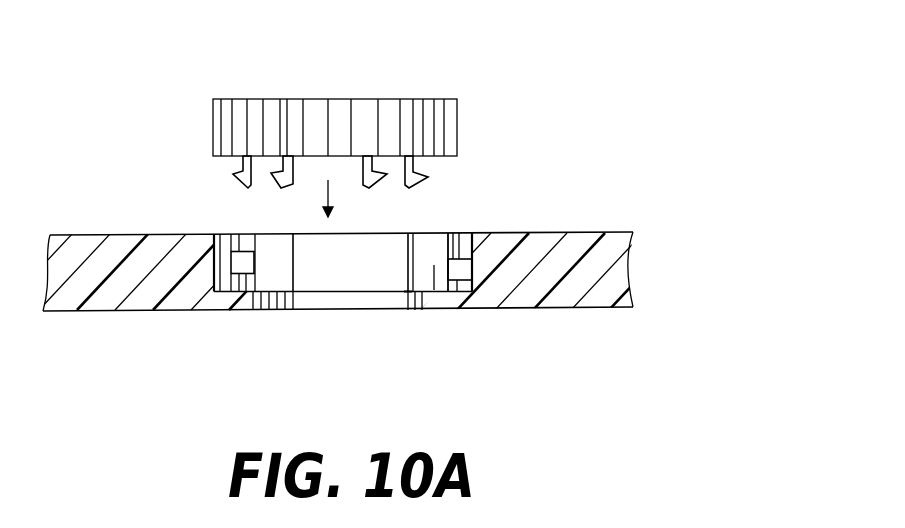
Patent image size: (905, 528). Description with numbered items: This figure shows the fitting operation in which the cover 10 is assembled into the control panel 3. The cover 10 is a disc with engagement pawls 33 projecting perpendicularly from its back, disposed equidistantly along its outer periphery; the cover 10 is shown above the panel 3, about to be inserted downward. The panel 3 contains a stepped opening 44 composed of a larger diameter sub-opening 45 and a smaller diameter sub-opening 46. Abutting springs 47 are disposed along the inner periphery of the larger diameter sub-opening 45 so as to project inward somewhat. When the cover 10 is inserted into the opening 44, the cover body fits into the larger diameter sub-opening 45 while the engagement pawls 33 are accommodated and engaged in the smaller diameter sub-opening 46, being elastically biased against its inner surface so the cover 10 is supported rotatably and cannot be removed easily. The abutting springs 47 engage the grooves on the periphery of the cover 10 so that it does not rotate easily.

The cover 10 is at (365, 98).
The engagement pawls 33 is at (248, 186).
The control panel 3 is at (585, 232).
The opening 44 is at (407, 316).
The larger diameter sub-opening 45 is at (307, 266).
The smaller diameter sub-opening 46 is at (345, 298).
The abutting springs 47 is at (243, 270).